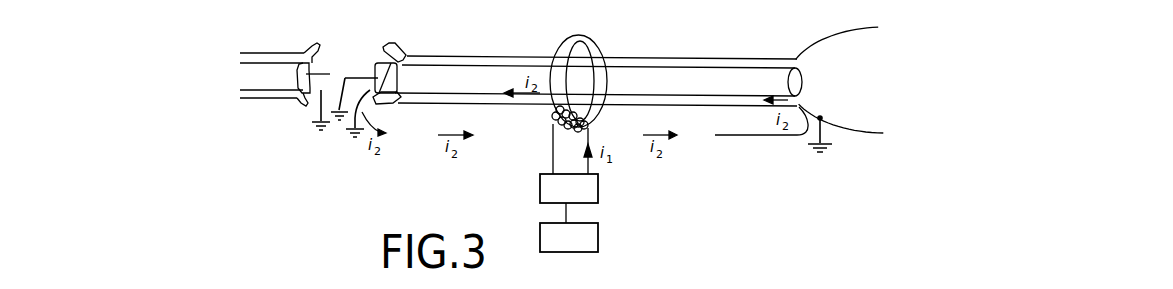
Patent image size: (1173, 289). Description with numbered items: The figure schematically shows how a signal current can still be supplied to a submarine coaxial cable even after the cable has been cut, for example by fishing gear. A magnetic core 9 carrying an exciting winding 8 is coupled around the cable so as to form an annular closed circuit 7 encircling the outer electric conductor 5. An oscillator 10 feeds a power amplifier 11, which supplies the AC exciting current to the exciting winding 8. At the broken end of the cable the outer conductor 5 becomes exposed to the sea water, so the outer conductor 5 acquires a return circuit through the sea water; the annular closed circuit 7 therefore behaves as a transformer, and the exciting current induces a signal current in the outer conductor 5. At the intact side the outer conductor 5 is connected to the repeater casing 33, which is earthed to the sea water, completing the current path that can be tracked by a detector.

The outer electric conductor 5 is at (378, 70).
The annular closed circuit 7 is at (590, 28).
The exciting winding 8 is at (553, 125).
The magnetic core 9 is at (590, 40).
The oscillator 10 is at (598, 237).
The power amplifier 11 is at (598, 183).
The repeater casing 33 is at (838, 32).